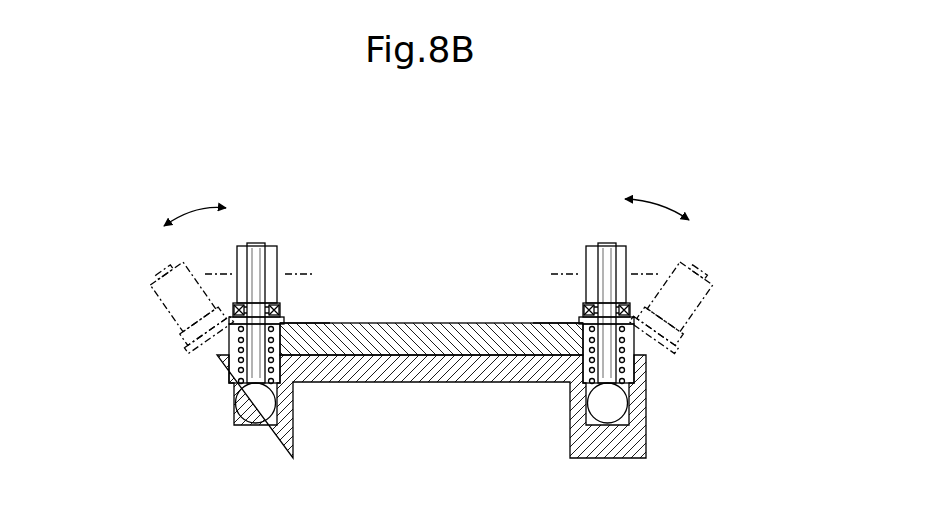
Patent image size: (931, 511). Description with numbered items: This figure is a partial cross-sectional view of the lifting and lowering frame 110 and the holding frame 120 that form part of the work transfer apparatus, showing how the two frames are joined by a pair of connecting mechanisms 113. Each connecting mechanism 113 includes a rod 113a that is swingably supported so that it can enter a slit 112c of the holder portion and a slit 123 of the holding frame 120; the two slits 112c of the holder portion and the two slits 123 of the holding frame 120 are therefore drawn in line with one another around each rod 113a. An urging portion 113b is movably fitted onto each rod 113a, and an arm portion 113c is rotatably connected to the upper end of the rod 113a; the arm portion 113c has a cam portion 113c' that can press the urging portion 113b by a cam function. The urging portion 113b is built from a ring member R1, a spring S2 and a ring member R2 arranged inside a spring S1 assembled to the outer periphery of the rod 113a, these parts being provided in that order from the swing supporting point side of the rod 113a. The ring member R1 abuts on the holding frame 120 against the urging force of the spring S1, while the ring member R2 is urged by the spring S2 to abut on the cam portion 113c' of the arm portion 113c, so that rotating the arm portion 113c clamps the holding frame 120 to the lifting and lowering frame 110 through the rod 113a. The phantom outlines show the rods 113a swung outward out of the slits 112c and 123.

The lifting and lowering frame 110 is at (508, 385).
The holding frame 120 is at (479, 320).
The connecting mechanism 113 is at (306, 188).
The rod 113a is at (256, 250).
The urging portion 113b is at (438, 148).
The arm portion 113c is at (431, 249).
The cam portion 113c' is at (466, 272).
The ring member R1 is at (282, 317).
The ring member R2 is at (282, 304).
The spring S1 is at (316, 324).
The spring S2 is at (282, 311).
The slit 112c is at (232, 372).
The slit 123 is at (236, 348).